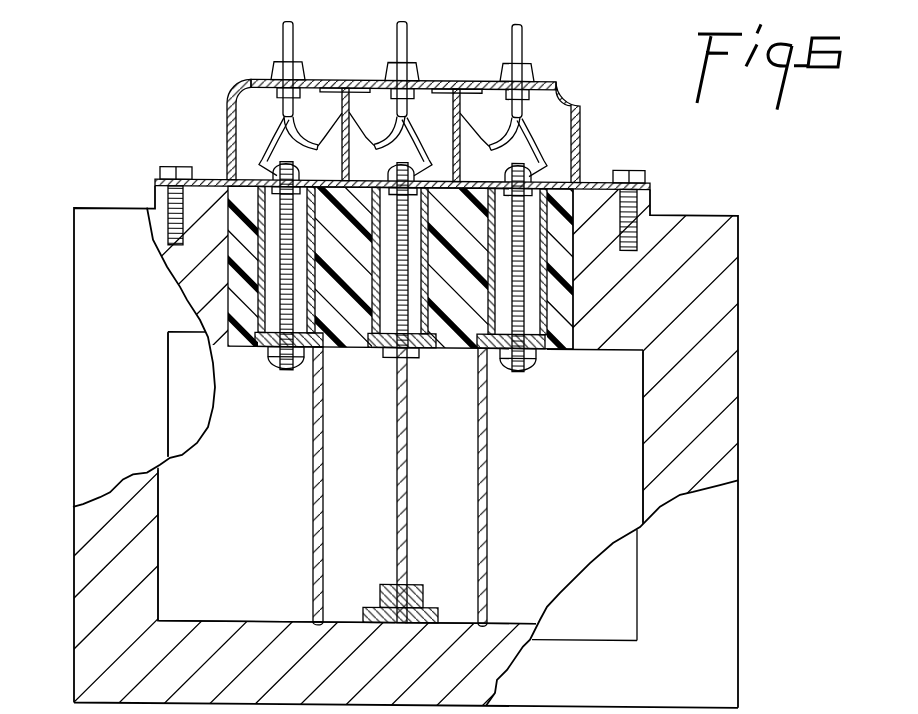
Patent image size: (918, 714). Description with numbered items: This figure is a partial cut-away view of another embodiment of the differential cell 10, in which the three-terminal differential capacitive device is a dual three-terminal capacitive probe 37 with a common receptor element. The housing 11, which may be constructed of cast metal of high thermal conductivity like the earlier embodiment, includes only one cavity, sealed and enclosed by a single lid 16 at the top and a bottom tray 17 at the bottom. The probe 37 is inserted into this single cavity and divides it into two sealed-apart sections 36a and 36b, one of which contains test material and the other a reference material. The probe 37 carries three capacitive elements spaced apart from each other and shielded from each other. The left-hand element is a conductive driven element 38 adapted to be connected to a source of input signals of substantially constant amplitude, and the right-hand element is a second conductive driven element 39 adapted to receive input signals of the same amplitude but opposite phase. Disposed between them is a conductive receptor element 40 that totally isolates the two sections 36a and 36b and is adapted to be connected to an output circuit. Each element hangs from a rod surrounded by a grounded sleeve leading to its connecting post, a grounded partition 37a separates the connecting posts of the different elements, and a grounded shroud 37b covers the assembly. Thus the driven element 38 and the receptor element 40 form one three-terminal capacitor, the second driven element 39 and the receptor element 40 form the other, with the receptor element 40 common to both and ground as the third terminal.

The differential cell 10 is at (670, 178).
The housing 11 is at (707, 214).
The lid 16 is at (201, 417).
The bottom tray 17 is at (173, 520).
The section 36a is at (572, 474).
The section 36b is at (213, 565).
The dual three-terminal capacitor probe 37 is at (578, 79).
The grounded partition 37a is at (351, 93).
The grounded shroud 37b is at (426, 75).
The driven element 38 is at (312, 515).
The second driven element 39 is at (487, 425).
The receptor element 40 is at (407, 544).